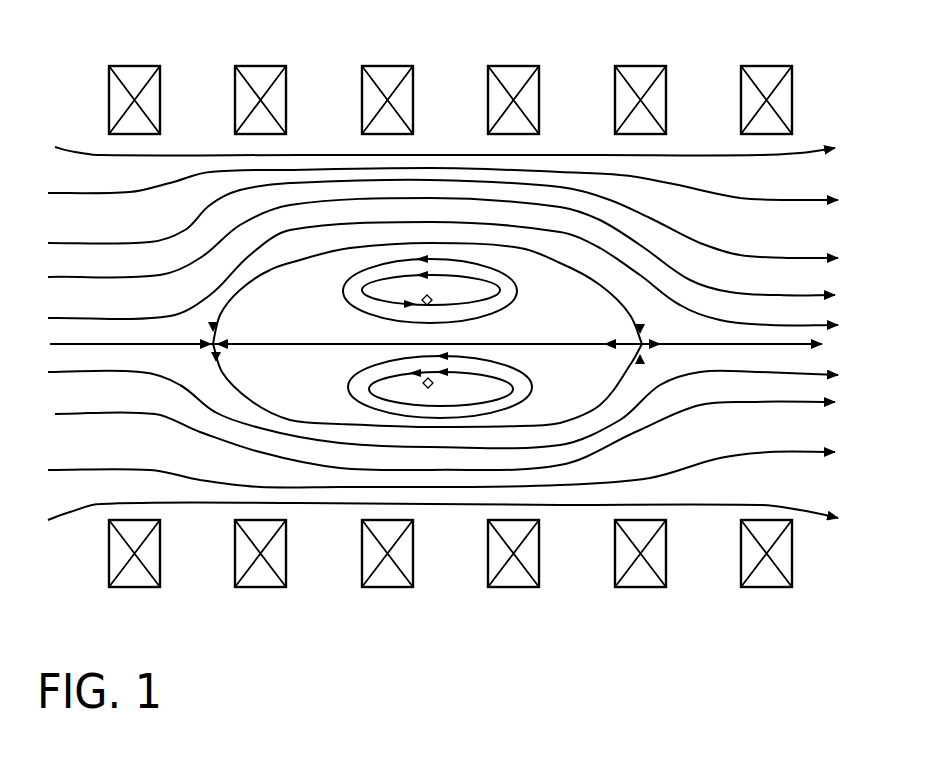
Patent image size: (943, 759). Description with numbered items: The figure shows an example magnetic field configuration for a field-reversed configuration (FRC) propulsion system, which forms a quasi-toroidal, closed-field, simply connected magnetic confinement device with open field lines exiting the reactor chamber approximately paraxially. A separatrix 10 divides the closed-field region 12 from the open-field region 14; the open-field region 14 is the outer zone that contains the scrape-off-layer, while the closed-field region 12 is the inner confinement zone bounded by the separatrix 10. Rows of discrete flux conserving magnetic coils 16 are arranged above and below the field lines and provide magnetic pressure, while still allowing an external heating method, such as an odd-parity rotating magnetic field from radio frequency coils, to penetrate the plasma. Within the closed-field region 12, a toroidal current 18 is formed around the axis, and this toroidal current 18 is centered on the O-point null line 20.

The separatrix 10 is at (298, 255).
The closed-field region 12 is at (425, 428).
The open-field region 14 is at (203, 165).
The flux conserving magnetic coil 16 is at (267, 591).
The toroidal current 18 is at (466, 385).
The O-point null line 20 is at (424, 380).